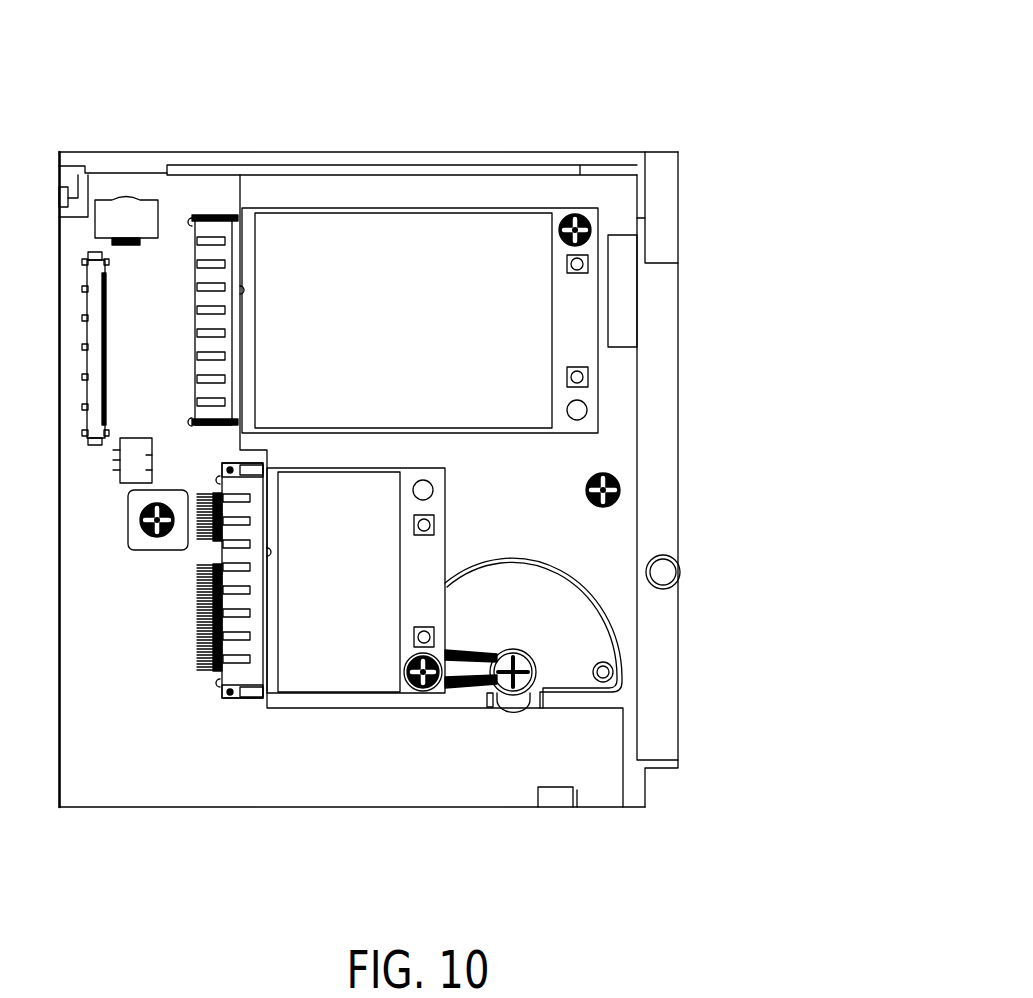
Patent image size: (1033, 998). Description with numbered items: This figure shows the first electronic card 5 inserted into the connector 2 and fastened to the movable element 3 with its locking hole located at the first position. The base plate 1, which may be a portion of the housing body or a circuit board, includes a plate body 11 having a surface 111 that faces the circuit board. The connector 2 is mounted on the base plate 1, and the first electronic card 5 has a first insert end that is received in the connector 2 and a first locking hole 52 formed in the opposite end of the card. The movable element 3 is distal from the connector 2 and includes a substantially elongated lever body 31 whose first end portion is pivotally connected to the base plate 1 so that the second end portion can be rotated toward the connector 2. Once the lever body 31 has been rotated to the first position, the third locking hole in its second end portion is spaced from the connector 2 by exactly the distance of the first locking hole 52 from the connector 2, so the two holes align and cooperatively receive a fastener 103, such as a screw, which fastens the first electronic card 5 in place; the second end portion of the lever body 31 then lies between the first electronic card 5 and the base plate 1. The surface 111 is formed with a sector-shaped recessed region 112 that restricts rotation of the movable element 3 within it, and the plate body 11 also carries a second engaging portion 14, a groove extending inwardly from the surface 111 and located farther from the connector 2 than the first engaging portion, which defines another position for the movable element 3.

The base plate 1 is at (575, 122).
The plate body 11 is at (660, 152).
The surface 111 is at (618, 420).
The sector-shaped recessed region 112 is at (548, 592).
The connector 2 is at (232, 670).
The first electronic card 5 is at (335, 668).
The first locking hole 52 is at (412, 693).
The fastener 103 is at (430, 688).
The lever body 31 is at (472, 655).
The movable element 3 is at (533, 654).
The second engaging portion 14 is at (613, 668).